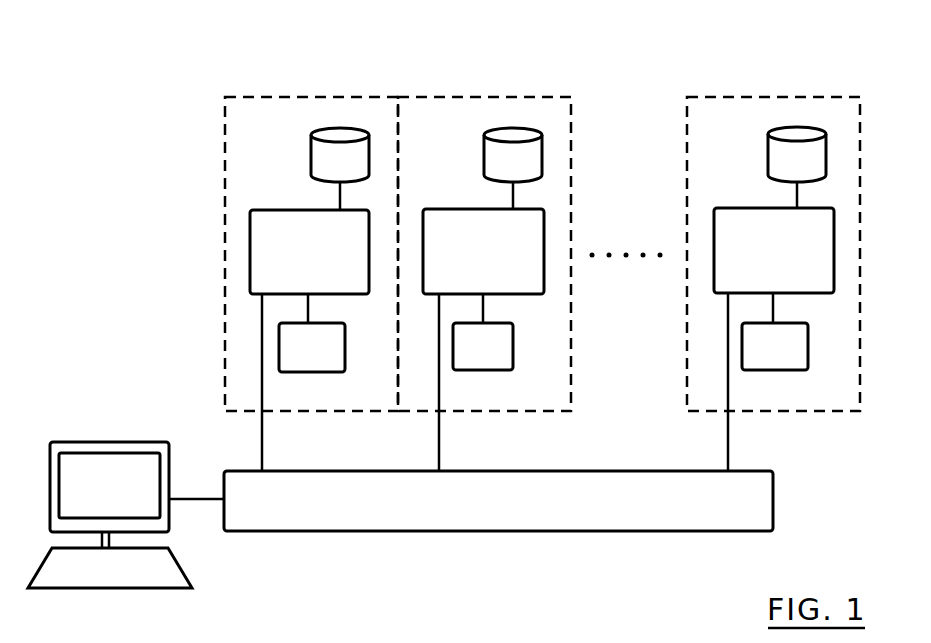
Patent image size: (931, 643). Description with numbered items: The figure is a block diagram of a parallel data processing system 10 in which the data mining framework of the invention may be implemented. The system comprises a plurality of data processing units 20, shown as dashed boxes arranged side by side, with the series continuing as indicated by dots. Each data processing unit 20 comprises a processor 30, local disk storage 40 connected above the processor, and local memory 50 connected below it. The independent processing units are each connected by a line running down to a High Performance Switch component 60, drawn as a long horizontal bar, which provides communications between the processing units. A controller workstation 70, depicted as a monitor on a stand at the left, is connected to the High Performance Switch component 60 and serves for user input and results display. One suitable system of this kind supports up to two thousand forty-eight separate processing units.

The parallel data processing system 10 is at (810, 59).
The data processing unit 20 is at (258, 97).
The processor 30 is at (250, 264).
The local disk storage 40 is at (340, 127).
The local memory 50 is at (325, 358).
The High Performance Switch (HPS) component 60 is at (567, 516).
The controller workstation 70 is at (100, 442).